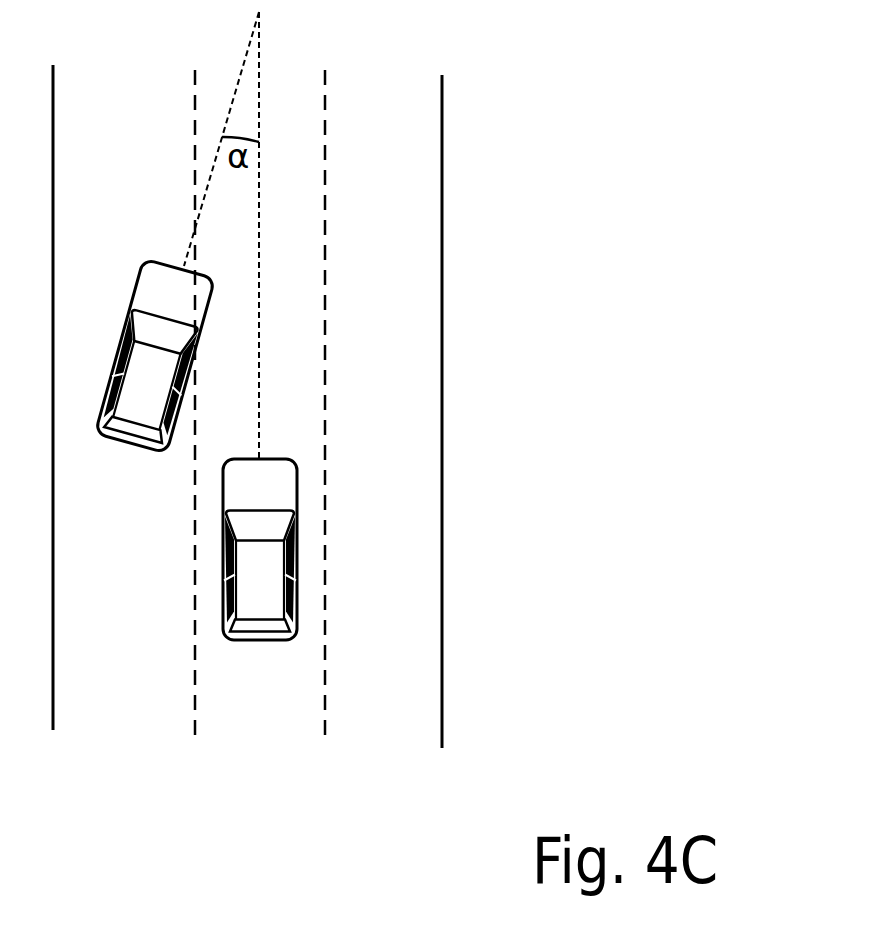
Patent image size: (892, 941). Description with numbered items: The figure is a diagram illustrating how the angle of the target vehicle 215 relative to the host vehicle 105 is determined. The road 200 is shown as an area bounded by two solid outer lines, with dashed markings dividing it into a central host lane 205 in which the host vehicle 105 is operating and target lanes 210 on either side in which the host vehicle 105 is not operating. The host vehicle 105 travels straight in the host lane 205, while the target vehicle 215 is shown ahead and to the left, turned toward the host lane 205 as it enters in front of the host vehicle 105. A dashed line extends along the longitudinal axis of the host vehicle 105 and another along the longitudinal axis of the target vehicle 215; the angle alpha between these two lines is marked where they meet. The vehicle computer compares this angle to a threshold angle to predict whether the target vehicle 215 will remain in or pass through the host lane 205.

The road 200 is at (288, 401).
The host lane 205 is at (291, 692).
The target lane 210 is at (161, 692).
The host vehicle 105 is at (297, 548).
The target vehicle 215 is at (132, 312).